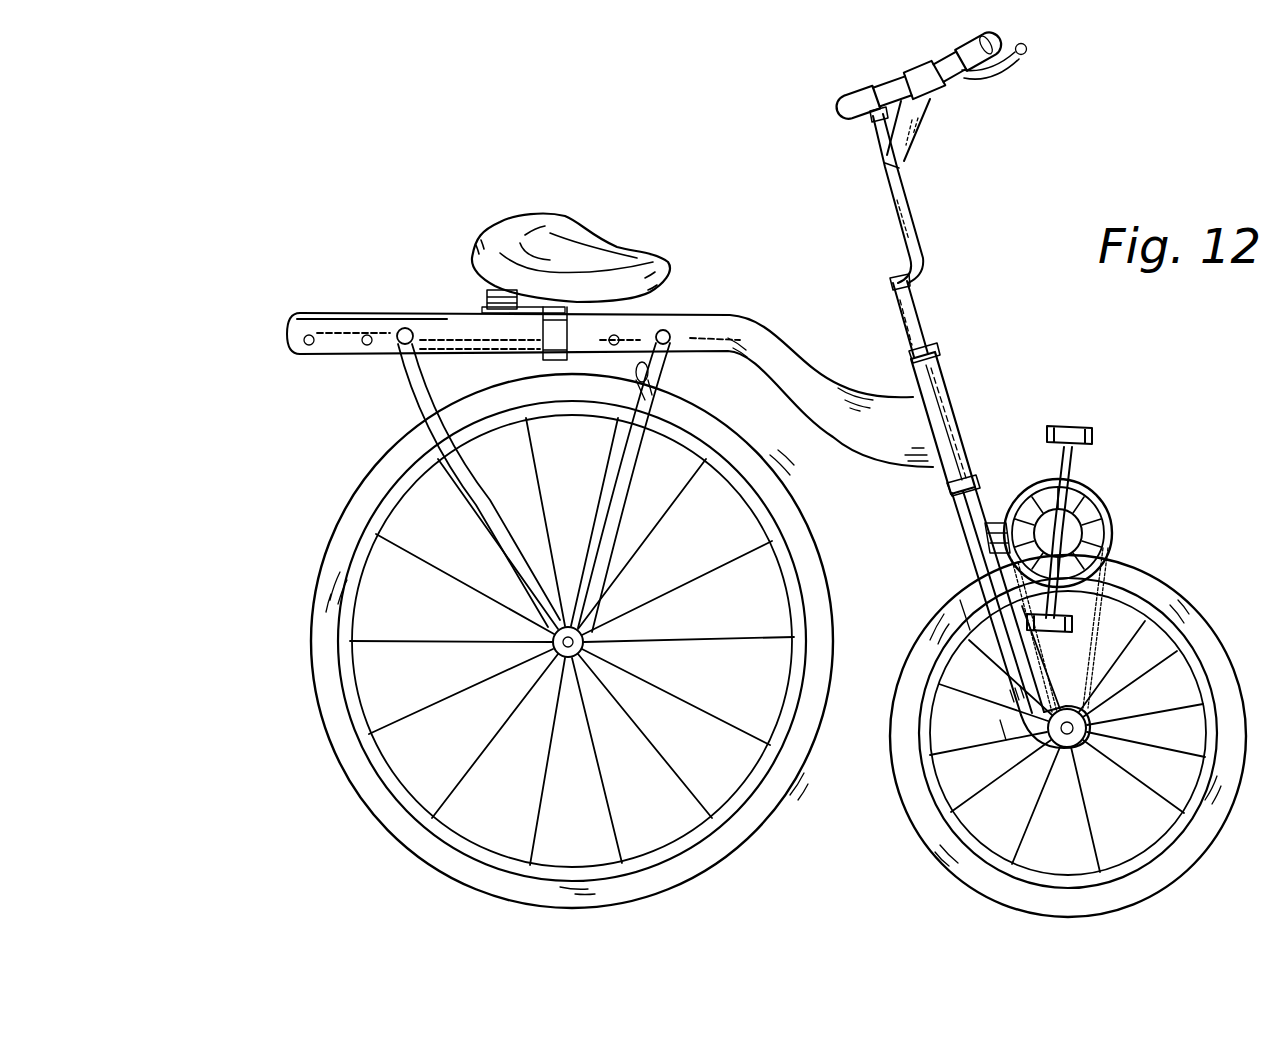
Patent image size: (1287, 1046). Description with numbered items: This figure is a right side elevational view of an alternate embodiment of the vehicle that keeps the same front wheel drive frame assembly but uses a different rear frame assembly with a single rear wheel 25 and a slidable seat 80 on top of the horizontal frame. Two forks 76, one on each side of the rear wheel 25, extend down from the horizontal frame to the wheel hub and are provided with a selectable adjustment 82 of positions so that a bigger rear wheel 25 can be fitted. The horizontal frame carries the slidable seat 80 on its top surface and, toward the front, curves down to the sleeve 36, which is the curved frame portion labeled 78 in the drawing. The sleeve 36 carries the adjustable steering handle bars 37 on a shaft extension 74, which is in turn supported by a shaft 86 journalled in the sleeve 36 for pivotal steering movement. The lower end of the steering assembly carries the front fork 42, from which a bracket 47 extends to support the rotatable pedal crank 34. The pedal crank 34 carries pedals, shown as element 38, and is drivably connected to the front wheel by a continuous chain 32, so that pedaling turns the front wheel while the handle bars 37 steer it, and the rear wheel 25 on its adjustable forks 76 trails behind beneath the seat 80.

The rear wheel 25 is at (320, 698).
The continuous chain 32 is at (1163, 628).
The pedal crank 34 is at (1100, 512).
The sleeve 36 is at (950, 407).
The steering handle bars 37 is at (933, 68).
The pedals 38 is at (1092, 440).
The front fork 42 is at (985, 575).
The bracket 47 is at (988, 532).
The shaft extension 74 is at (913, 113).
The forks 76 is at (448, 505).
The frame 78 is at (856, 440).
The slidable seat 80 is at (472, 250).
The selectable adjustment 82 is at (372, 360).
The shaft 86 is at (922, 318).